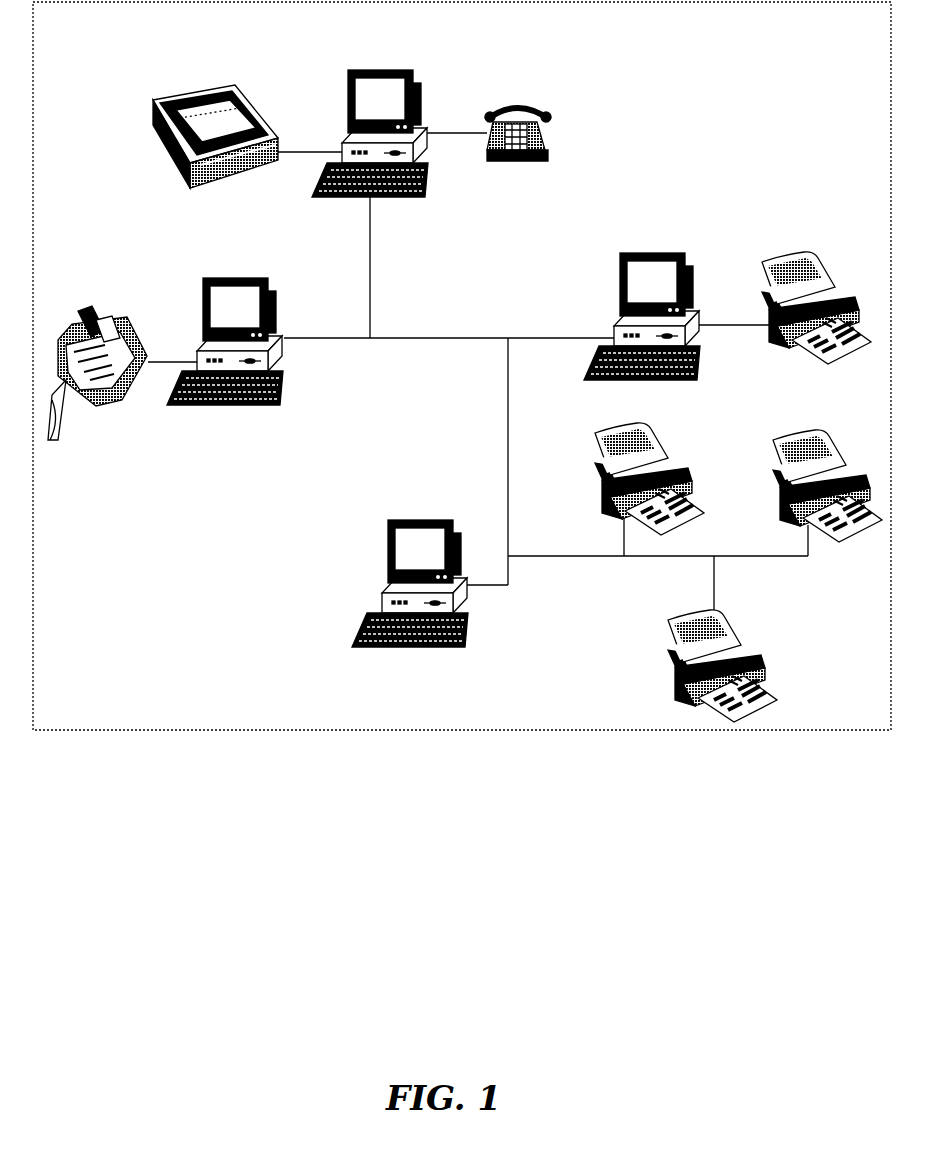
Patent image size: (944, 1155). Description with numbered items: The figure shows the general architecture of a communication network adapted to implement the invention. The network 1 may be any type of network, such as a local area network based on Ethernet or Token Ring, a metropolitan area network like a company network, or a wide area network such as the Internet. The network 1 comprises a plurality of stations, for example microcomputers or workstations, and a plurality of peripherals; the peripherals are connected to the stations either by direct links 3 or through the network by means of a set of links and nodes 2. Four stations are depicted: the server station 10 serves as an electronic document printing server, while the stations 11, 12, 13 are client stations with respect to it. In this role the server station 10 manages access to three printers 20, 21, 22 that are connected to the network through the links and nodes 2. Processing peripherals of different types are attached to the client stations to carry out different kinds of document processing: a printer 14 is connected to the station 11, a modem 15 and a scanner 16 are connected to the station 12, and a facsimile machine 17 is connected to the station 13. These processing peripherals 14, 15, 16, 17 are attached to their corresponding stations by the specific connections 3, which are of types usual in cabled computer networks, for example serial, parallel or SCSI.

The network 1 is at (761, 90).
The set of links and nodes 2 is at (537, 337).
The direct links 3 is at (320, 152).
The server station 10 is at (415, 520).
The client station 11 is at (652, 252).
The client station 12 is at (385, 70).
The client station 13 is at (233, 276).
The printer 14 is at (797, 256).
The modem 15 is at (520, 103).
The scanner 16 is at (216, 88).
The facsimile machine 17 is at (118, 318).
The printer 20 is at (592, 433).
The printer 21 is at (680, 630).
The printer 22 is at (770, 443).